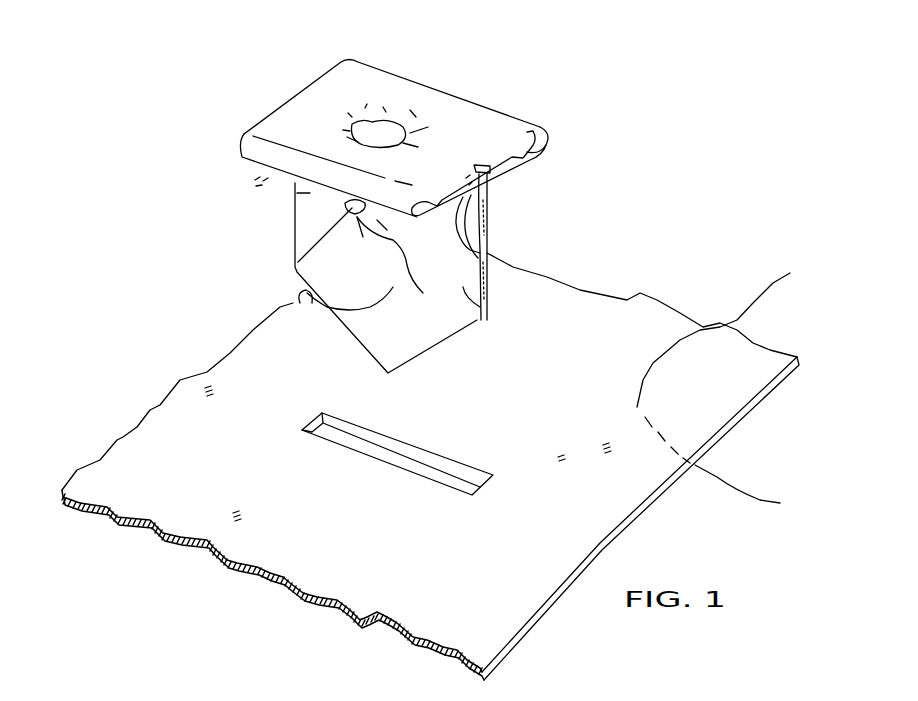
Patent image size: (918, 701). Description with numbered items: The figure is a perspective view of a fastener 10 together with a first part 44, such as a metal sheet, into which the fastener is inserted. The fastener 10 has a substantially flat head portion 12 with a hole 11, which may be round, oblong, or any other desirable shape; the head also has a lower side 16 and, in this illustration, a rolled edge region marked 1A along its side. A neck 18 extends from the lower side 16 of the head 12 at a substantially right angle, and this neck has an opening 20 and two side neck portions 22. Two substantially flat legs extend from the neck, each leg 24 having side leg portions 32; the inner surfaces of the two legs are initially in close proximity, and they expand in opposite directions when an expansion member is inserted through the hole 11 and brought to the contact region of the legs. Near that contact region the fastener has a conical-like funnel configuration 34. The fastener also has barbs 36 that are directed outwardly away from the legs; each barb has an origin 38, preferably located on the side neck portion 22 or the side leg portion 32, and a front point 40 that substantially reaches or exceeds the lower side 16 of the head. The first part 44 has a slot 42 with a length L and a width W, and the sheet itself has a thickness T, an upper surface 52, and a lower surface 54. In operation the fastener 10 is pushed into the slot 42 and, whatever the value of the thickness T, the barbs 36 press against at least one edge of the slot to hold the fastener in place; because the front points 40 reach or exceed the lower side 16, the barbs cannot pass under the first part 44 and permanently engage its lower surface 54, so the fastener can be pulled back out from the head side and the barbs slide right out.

The fastener 10 is at (515, 72).
The hole 11 is at (387, 133).
The substantially flat head portion 12 is at (250, 170).
The rolled edge portion 1A is at (488, 140).
The lower side 16 is at (513, 147).
The neck 18 is at (327, 193).
The opening 20 is at (297, 243).
The side neck portions 22 is at (483, 253).
The leg 24 is at (307, 303).
The side leg portions 32 is at (300, 223).
The funnel configuration 34 is at (348, 251).
The barbs 36 is at (480, 215).
The origin 38 is at (483, 242).
The front point 40 is at (460, 193).
The slot 42 is at (397, 460).
The first part 44 is at (658, 317).
The upper surface 52 is at (726, 360).
The lower surface 54 is at (755, 496).
The length L is at (510, 452).
The width W is at (487, 503).
The thickness T is at (738, 380).